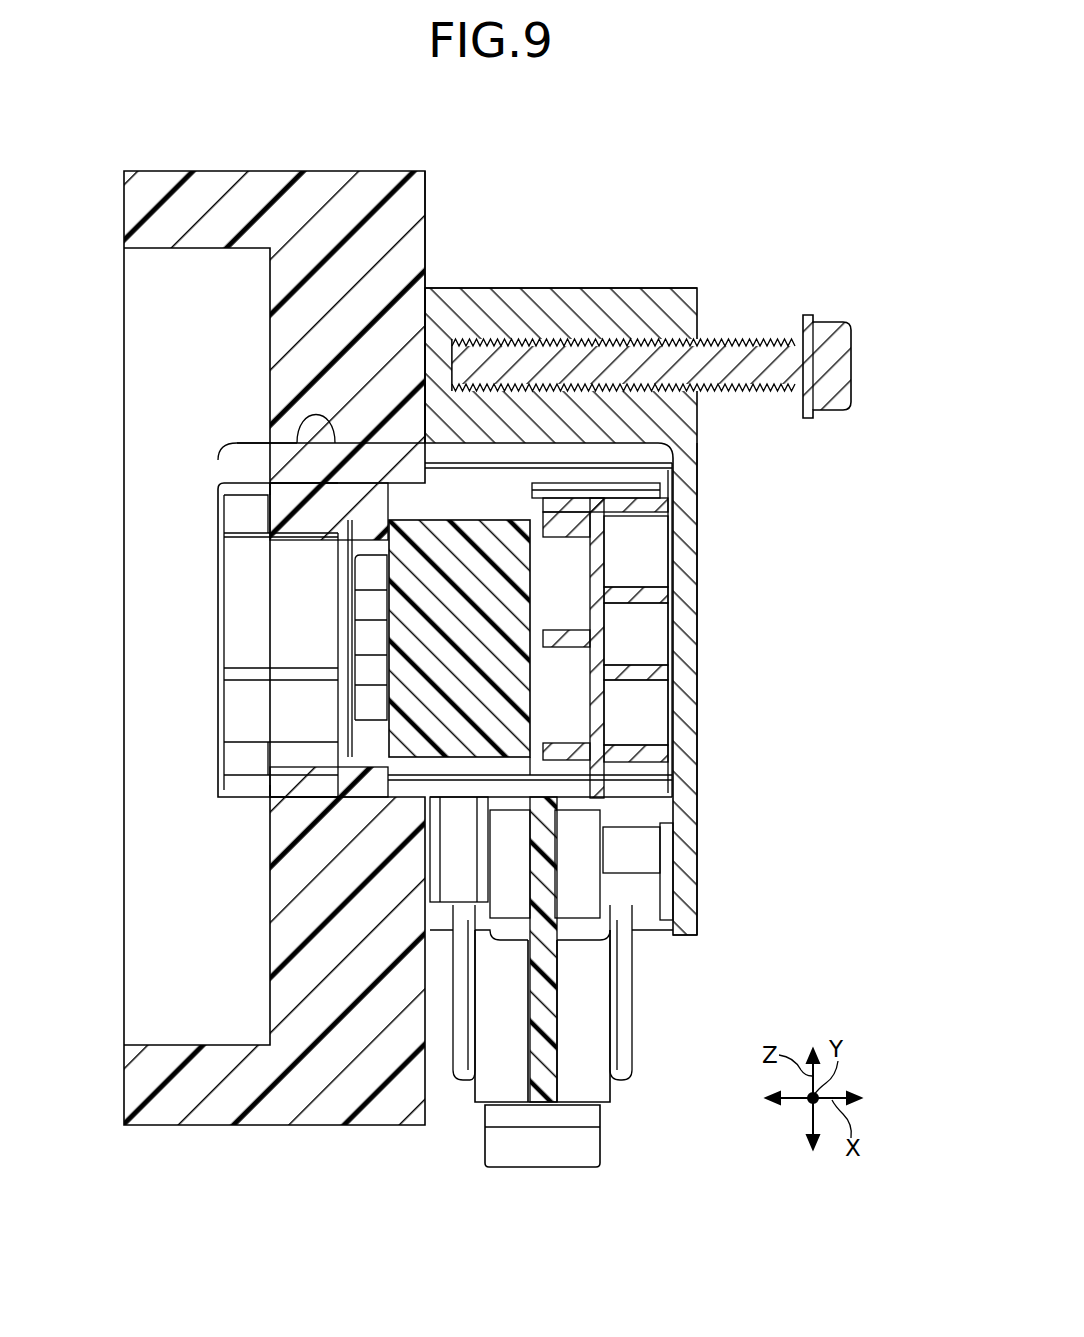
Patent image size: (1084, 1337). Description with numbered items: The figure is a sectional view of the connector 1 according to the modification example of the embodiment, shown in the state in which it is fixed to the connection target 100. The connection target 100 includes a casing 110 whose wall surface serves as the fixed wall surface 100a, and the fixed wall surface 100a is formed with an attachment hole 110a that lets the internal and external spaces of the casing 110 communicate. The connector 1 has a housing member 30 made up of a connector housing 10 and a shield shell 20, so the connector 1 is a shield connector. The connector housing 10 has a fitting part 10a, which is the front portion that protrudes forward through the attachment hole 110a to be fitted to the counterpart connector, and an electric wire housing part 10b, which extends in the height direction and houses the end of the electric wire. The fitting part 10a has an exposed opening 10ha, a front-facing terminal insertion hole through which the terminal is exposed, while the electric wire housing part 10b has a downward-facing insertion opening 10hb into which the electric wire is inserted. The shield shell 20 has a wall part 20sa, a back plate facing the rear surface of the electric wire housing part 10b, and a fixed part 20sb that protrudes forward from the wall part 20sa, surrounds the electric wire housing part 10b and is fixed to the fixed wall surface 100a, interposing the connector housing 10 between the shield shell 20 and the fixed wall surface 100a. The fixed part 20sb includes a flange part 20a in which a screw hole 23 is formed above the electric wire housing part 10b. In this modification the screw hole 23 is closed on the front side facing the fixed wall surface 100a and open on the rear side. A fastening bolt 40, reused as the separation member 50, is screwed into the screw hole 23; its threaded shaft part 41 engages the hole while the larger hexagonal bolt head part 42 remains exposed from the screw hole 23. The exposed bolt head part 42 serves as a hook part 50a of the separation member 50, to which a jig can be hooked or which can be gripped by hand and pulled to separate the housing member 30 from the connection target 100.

The connector 1 is at (729, 777).
The connector housing 10 is at (358, 710).
The fitting part 10a is at (303, 412).
The electric wire housing part 10b is at (450, 397).
The exposed opening 10ha is at (230, 508).
The insertion opening 10hb is at (543, 1168).
The shield shell 20 is at (469, 567).
The flange part 20a is at (425, 326).
The wall part 20sa is at (681, 620).
The fixed part 20sb is at (481, 296).
The screw hole 23 is at (432, 354).
The housing member 30 is at (685, 200).
The fastening bolt 40 is at (707, 407).
The shaft part 41 is at (757, 392).
The bolt head part 42 is at (835, 407).
The separation member 50 is at (707, 407).
The hook part 50a is at (831, 418).
The connection target 100 is at (322, 602).
The fixed wall surface 100a is at (428, 185).
The casing 110 is at (336, 178).
The attachment hole 110a is at (296, 500).